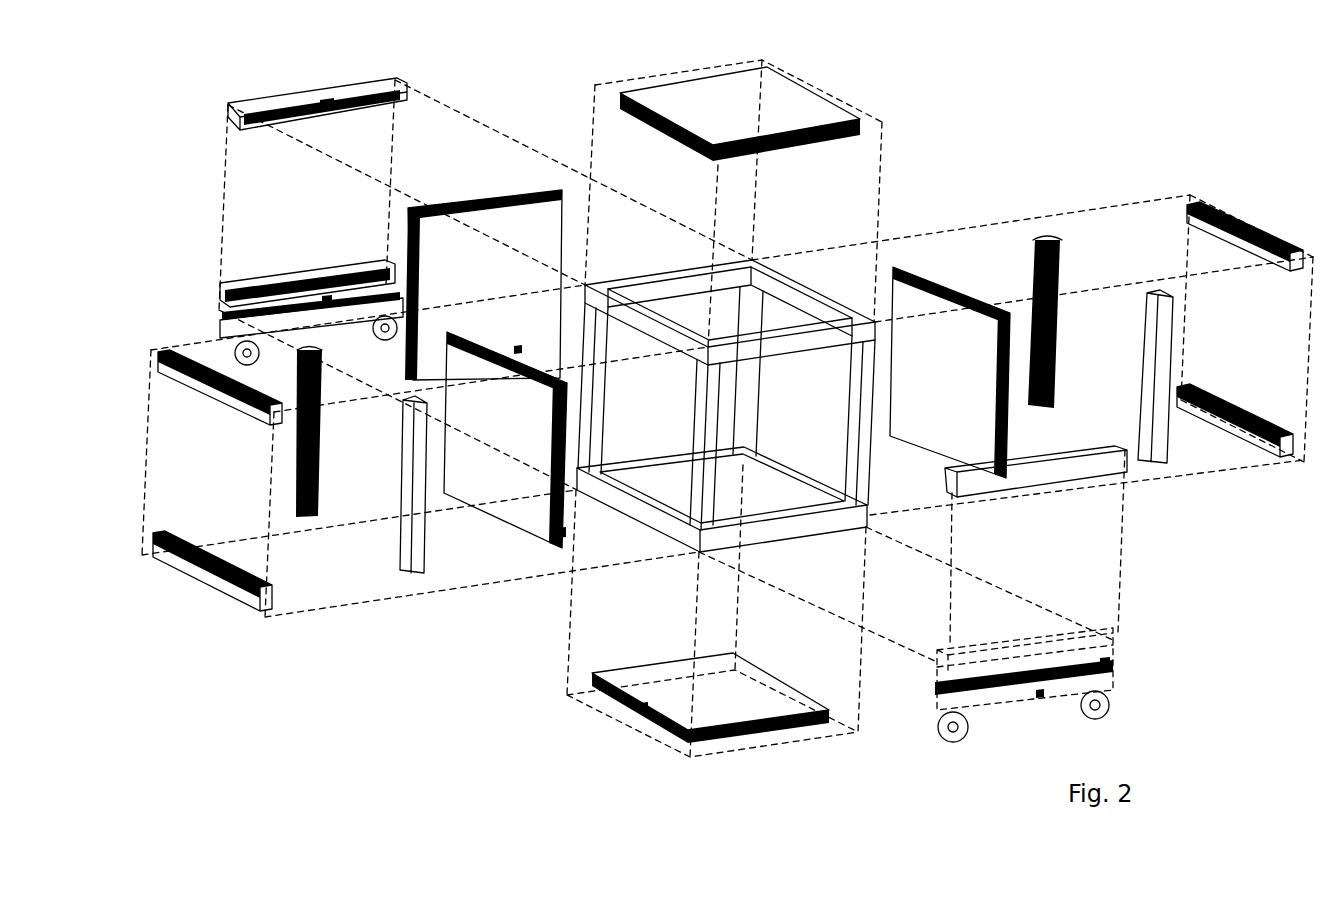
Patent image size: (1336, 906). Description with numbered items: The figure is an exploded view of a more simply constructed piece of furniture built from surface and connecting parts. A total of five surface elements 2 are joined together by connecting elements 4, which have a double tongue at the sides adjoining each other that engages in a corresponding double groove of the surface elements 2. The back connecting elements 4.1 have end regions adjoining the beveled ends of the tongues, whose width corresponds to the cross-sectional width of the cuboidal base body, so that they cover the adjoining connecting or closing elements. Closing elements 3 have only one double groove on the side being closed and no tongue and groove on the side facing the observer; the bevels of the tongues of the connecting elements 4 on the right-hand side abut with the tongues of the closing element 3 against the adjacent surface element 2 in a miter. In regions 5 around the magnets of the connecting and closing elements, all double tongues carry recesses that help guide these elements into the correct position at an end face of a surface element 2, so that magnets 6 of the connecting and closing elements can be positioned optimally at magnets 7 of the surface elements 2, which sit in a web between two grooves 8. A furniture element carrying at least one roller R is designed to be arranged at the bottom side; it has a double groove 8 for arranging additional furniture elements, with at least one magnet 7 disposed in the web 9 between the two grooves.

The surface element 2 is at (787, 110).
The closing element 3 is at (417, 560).
The connecting element 4 is at (220, 410).
The back connecting element 4.1 is at (297, 100).
The region around the magnets 5 is at (331, 452).
The magnet of the connecting and closing elements 6 is at (327, 107).
The magnet of the surface elements 7 is at (327, 313).
The double groove 8 is at (220, 316).
The web 9 is at (957, 682).
The roller R is at (940, 742).